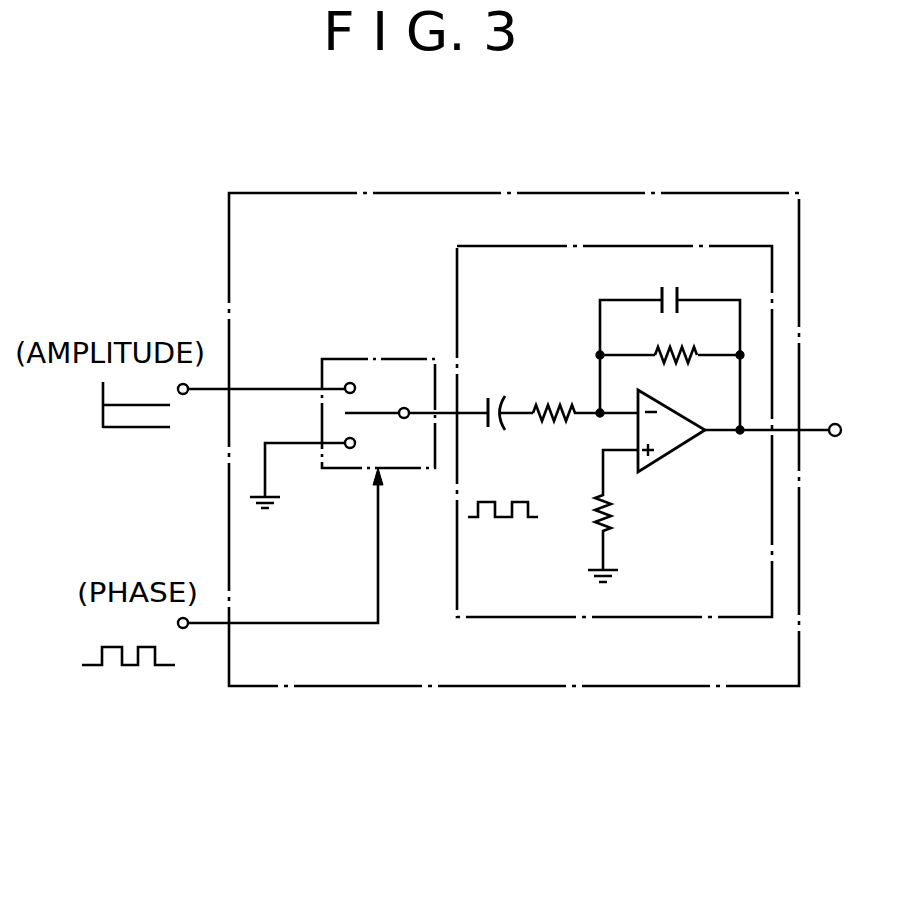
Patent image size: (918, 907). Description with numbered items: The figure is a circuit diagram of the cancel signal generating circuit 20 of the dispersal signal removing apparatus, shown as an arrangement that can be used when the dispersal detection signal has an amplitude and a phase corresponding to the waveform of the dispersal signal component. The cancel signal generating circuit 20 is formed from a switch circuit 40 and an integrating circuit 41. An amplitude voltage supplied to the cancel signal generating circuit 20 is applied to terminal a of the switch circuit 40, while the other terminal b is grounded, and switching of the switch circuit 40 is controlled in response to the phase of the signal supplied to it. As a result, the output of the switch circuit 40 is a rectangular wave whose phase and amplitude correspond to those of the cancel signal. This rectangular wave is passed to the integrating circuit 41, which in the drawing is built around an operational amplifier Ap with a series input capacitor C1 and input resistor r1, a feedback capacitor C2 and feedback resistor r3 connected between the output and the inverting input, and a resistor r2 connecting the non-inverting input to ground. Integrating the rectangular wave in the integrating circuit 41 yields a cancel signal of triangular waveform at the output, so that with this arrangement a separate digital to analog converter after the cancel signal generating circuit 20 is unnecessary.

The cancel signal generating circuit 20 is at (295, 690).
The switch circuit 40 is at (405, 358).
The integrating circuit 41 is at (510, 619).
The capacitor C1 is at (495, 492).
The capacitor C2 is at (686, 288).
The resistor r1 is at (585, 391).
The resistor r2 is at (614, 516).
The resistor r3 is at (679, 340).
The operational amplifier Ap is at (673, 453).